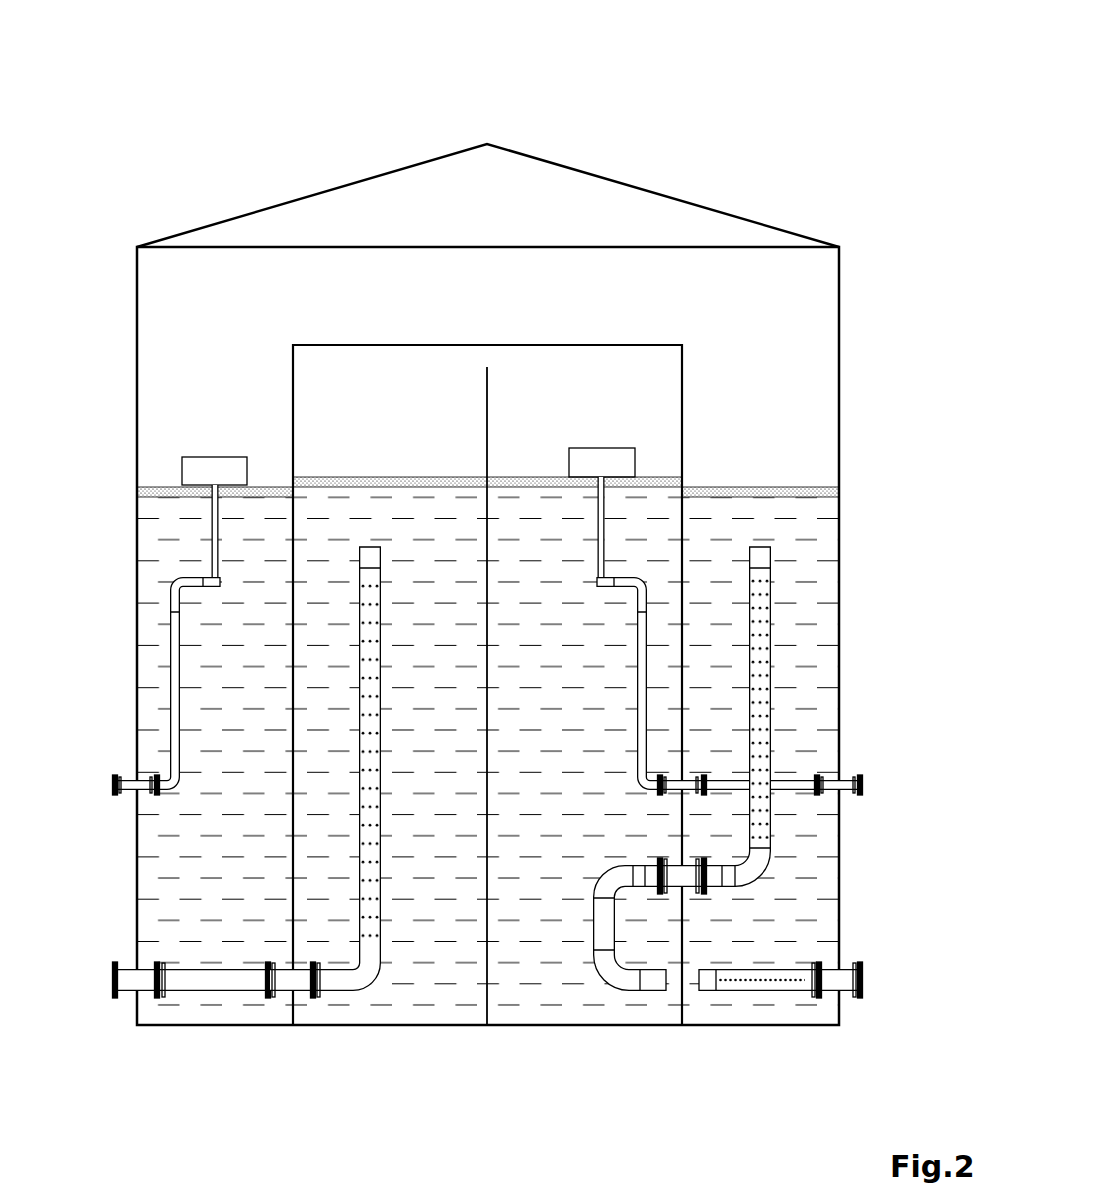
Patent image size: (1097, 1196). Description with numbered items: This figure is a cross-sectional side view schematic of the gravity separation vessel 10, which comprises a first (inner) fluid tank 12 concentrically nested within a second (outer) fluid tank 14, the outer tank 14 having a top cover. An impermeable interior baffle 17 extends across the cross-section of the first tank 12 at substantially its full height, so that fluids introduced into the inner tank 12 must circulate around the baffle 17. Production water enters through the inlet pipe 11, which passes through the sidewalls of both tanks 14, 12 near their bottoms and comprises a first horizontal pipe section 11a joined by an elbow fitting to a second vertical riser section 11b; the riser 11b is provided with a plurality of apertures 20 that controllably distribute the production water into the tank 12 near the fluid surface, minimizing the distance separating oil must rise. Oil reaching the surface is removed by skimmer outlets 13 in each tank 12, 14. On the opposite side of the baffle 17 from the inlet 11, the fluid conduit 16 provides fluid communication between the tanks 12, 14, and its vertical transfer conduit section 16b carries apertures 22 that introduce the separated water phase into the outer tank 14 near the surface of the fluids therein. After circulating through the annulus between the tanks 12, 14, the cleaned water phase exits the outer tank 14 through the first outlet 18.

The separation vessel 10 is at (786, 94).
The second (outer) fluid tank 14 is at (840, 340).
The first (inner) fluid tank 12 is at (293, 401).
The interior baffle 17 is at (490, 443).
The skimmer outlet 13 is at (112, 786).
The apertures 20 is at (366, 845).
The inlet pipe 11 is at (112, 981).
The first horizontal pipe section 11a is at (230, 992).
The second vertical pipe section (riser) 11b is at (345, 992).
The apertures 22 is at (762, 605).
The vertical transfer conduit section 16b is at (770, 650).
The fluid conduit 16 is at (633, 992).
The first outlet 18 is at (863, 980).